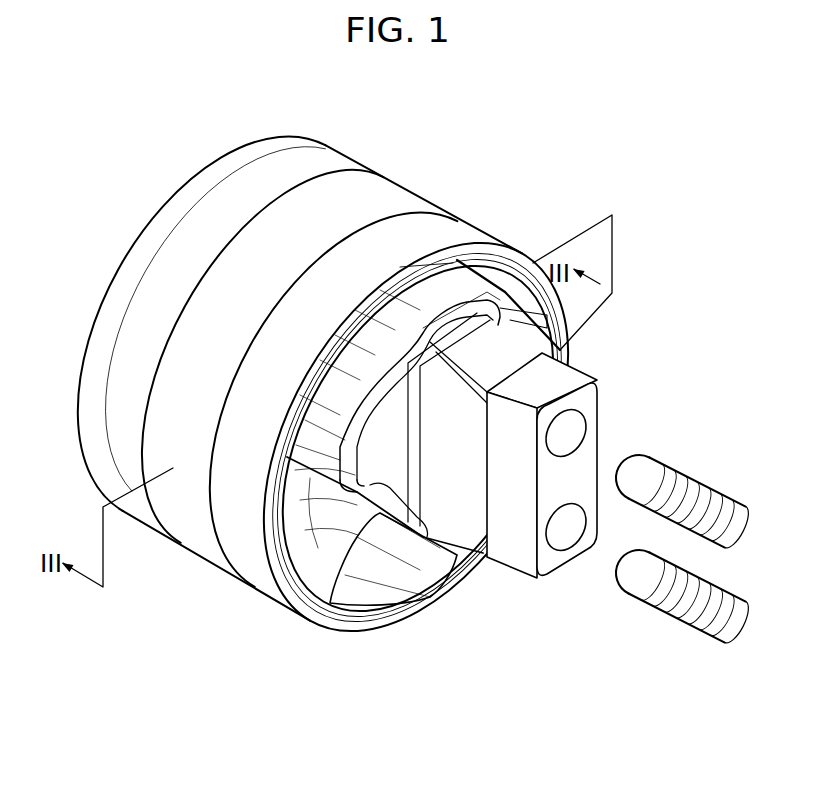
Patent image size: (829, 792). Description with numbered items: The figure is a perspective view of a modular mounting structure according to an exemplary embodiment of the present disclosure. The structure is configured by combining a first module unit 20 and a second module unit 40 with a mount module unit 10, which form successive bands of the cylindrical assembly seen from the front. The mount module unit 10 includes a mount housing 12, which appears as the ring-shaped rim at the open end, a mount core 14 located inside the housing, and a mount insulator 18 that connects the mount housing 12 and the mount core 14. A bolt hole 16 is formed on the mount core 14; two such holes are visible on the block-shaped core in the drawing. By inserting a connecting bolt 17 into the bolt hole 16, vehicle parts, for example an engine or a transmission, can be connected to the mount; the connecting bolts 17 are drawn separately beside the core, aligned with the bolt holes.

The mount module unit 10 is at (309, 628).
The mount housing 12 is at (260, 578).
The mount core 14 is at (507, 577).
The bolt hole 16 is at (567, 430).
The connecting bolt 17 is at (693, 483).
The mount insulator 18 is at (375, 597).
The first module unit 20 is at (209, 571).
The second module unit 40 is at (146, 531).